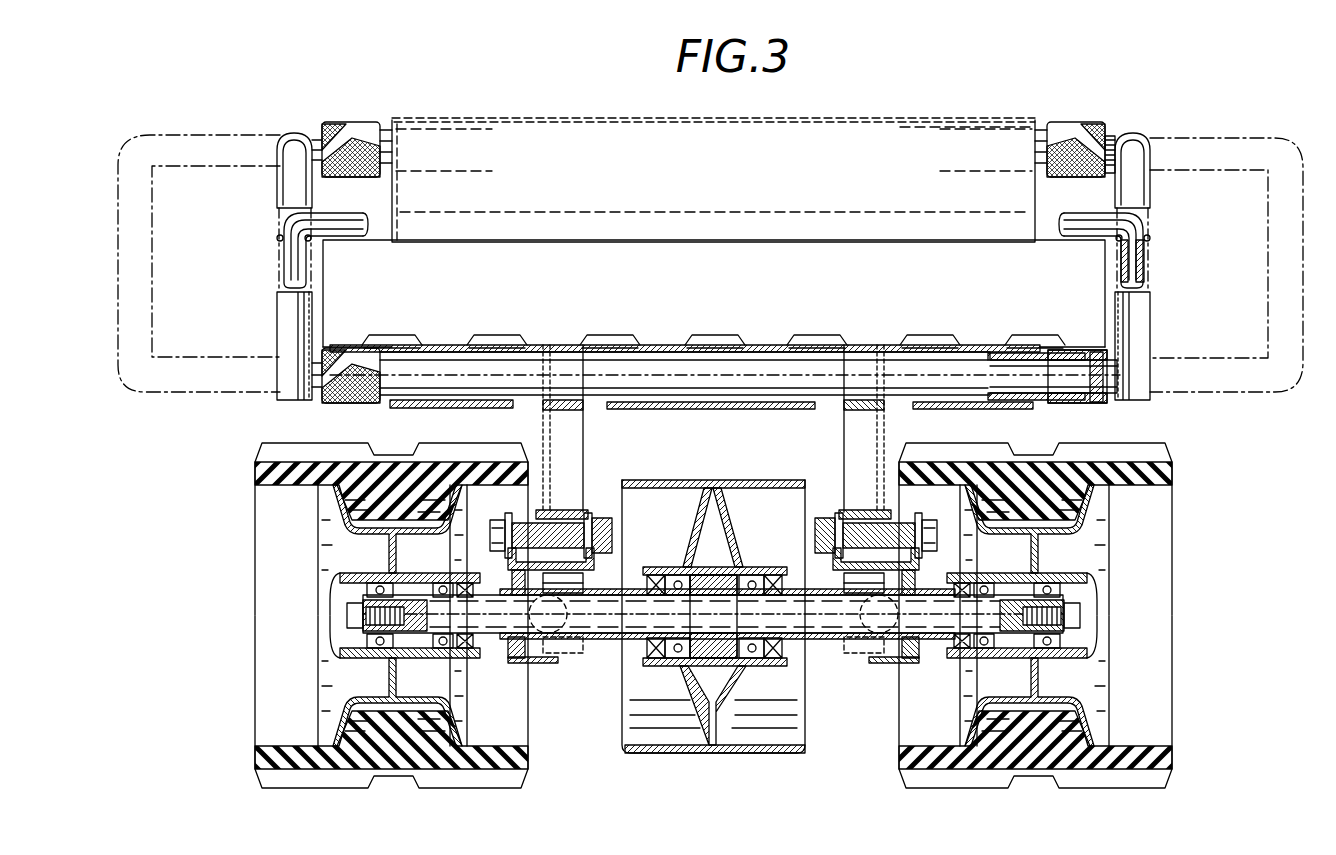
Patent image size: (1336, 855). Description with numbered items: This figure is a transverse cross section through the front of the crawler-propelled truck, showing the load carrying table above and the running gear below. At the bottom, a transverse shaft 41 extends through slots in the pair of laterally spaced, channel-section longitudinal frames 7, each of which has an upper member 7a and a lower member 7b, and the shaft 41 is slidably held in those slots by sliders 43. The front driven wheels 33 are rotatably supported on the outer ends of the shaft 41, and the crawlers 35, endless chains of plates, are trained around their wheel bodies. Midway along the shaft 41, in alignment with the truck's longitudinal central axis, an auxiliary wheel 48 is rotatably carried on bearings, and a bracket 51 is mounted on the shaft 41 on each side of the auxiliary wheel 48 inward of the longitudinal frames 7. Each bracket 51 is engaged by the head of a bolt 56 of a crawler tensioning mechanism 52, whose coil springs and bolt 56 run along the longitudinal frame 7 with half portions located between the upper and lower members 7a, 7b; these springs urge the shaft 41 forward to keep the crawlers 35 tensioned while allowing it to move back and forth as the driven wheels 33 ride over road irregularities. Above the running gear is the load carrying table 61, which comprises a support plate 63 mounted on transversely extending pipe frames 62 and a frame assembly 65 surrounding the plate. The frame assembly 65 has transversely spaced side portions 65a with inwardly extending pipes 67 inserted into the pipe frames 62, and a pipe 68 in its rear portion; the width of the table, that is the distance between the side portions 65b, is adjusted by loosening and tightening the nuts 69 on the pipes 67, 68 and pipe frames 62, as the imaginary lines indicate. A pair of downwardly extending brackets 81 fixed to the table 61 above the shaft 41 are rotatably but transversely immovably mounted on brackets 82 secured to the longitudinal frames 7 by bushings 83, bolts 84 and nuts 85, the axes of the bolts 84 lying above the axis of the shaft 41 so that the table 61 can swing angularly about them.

The longitudinal frame 7 is at (519, 660).
The upper member 7a is at (560, 512).
The lower member 7b is at (540, 664).
The driven wheel 33 is at (442, 765).
The crawler 35 is at (328, 788).
The shaft 41 is at (616, 632).
The slider 43 is at (512, 586).
The auxiliary wheel 48 is at (686, 754).
The bracket 51 is at (583, 586).
The crawler tensioning mechanism 52 is at (583, 662).
The bolt 56 is at (515, 656).
The load carrying table 61 is at (856, 325).
The pipe frame 62 is at (770, 352).
The support plate 63 is at (718, 342).
The frame assembly 65 is at (1152, 152).
The side portion 65a is at (283, 186).
The side portion 65b is at (957, 127).
The pipe 67 is at (1114, 142).
The pipe 68 is at (1005, 128).
The nut 69 is at (354, 122).
The bracket 81 is at (588, 416).
The bracket 82 is at (596, 562).
The bushing 83 is at (838, 513).
The bolt 84 is at (490, 547).
The nut 85 is at (612, 522).